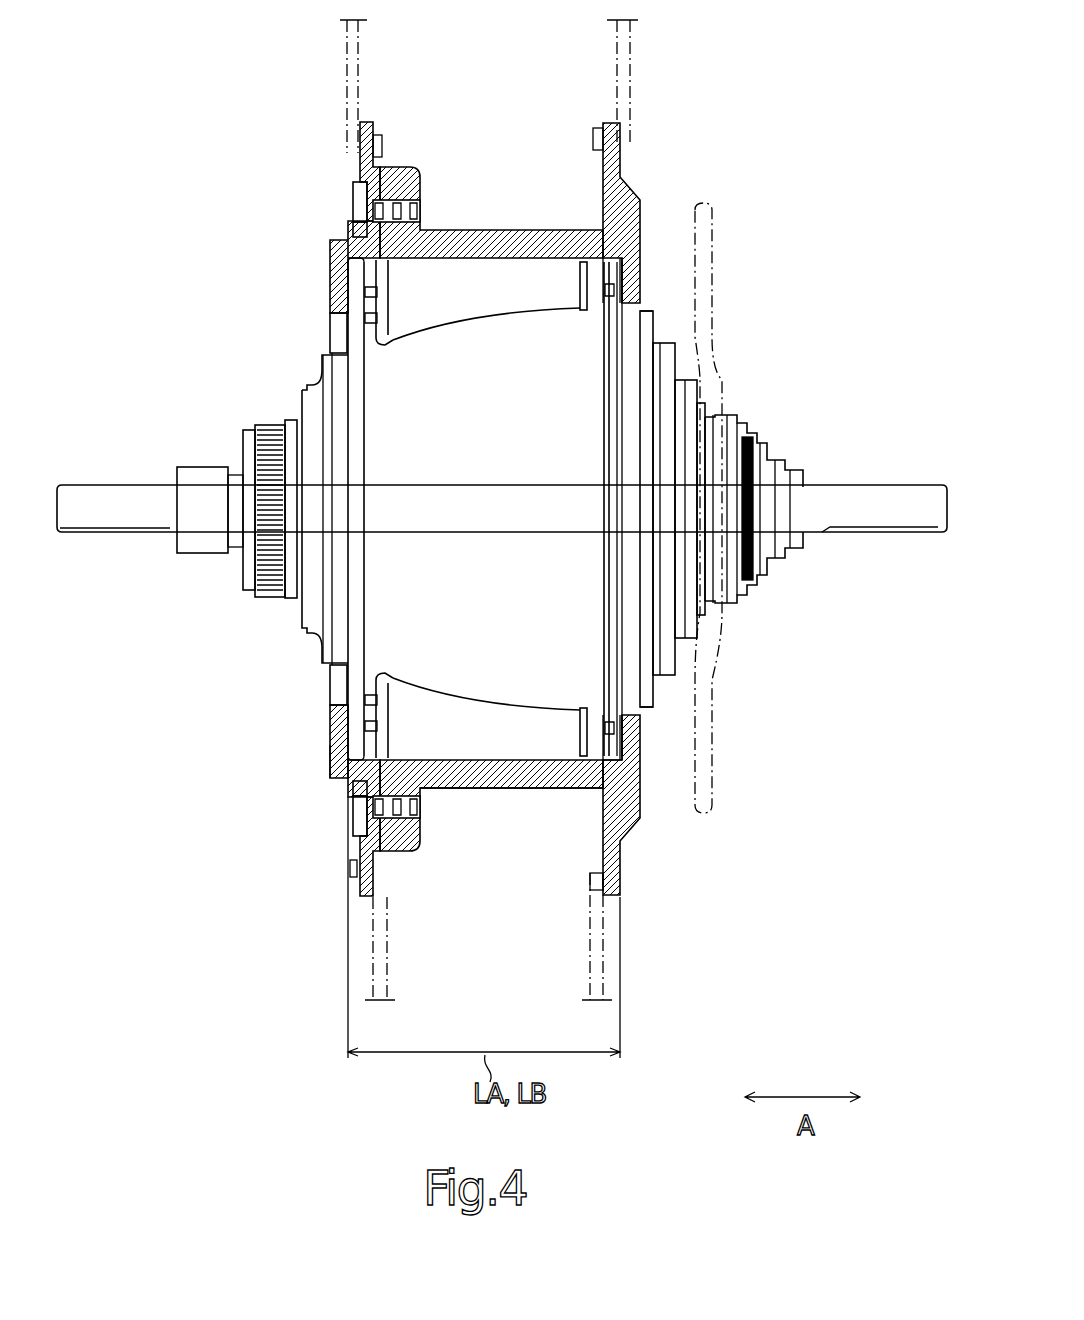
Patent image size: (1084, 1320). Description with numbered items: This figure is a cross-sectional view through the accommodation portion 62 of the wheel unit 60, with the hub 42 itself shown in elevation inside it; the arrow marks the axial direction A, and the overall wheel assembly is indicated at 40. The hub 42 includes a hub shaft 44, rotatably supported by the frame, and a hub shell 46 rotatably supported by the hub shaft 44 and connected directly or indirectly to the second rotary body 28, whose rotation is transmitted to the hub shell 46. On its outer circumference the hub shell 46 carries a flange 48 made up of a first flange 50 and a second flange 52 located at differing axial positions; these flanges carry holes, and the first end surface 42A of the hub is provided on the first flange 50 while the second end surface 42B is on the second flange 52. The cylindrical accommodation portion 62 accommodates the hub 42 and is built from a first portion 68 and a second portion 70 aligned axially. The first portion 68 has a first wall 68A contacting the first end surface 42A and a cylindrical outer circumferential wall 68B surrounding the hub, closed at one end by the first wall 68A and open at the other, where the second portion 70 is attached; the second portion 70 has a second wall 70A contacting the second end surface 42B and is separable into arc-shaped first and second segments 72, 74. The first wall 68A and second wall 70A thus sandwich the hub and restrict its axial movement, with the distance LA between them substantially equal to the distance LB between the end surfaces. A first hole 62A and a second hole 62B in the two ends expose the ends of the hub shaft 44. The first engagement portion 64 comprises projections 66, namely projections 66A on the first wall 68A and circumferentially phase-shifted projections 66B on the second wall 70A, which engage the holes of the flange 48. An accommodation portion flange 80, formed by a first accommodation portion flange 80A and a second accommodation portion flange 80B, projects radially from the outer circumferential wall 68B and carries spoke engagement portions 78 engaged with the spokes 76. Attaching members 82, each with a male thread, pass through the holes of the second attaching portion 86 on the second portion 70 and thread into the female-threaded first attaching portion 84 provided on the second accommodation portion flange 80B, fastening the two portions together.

The second rotary body 28 is at (714, 296).
The hub assembly 40 is at (805, 67).
The hub 42 is at (806, 399).
The first end surface 42A is at (640, 737).
The second end surface 42B is at (330, 747).
The hub shaft 44 is at (117, 514).
The hub shell 46 is at (510, 697).
The flange 48 is at (491, 509).
The first flange 50 is at (610, 745).
The second flange 52 is at (360, 736).
The wheel unit 60 is at (785, 191).
The accommodation portion 62 is at (500, 236).
The first hole 62A is at (628, 712).
The second hole 62B is at (330, 683).
The first engagement portion 64 is at (411, 291).
The projections 66 is at (481, 509).
The projections on first wall 66A is at (580, 292).
The projections on second wall 66B is at (390, 296).
The first portion 68 is at (500, 790).
The first wall 68A is at (645, 277).
The outer circumferential wall 68B is at (555, 790).
The second portion 70 is at (330, 768).
The second wall 70A is at (330, 322).
The first segment 72 is at (330, 268).
The second segment 74 is at (330, 722).
The spokes 76 is at (362, 36).
The spoke engagement portions 78 is at (612, 143).
The accommodation portion flange 80 is at (473, 509).
The first accommodation portion flange 80A is at (615, 152).
The second accommodation portion flange 80B is at (360, 163).
The attaching members 82 is at (357, 230).
The first attaching portion 84 is at (418, 212).
The second attaching portion 86 is at (360, 212).